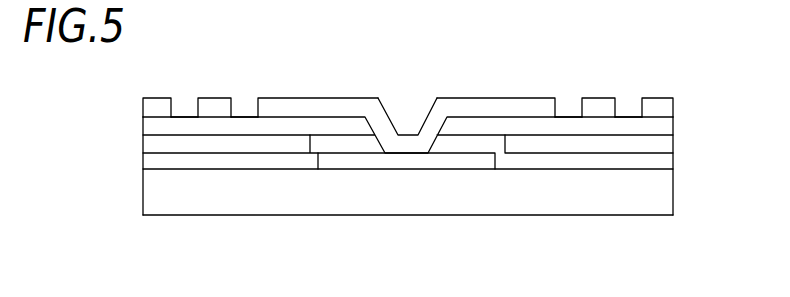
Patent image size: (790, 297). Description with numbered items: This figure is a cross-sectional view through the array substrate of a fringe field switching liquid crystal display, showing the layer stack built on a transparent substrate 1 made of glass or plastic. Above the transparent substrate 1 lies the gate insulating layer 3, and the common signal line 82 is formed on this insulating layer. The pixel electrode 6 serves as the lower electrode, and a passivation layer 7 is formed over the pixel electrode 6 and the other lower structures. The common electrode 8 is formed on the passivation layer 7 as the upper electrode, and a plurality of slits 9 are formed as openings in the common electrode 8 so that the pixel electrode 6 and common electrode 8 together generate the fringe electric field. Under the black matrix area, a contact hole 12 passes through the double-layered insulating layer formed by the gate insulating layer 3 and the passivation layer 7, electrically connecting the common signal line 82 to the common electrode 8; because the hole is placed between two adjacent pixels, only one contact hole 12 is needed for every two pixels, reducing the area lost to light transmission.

The transparent substrate 1 is at (478, 197).
The gate insulating layer 3 is at (653, 165).
The pixel electrode 6 is at (642, 148).
The passivation layer 7 is at (653, 128).
The common electrode 8 is at (480, 111).
The slits 9 is at (625, 107).
The contact holes 12 is at (405, 122).
The common signal line 82 is at (386, 162).